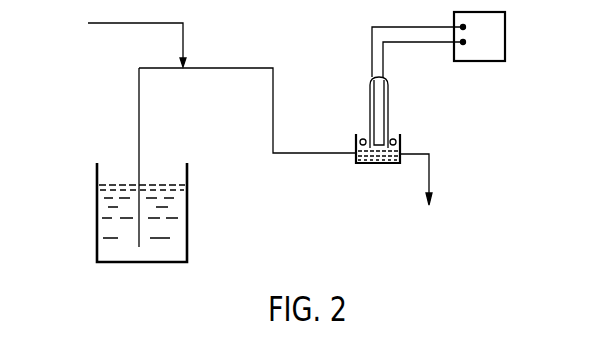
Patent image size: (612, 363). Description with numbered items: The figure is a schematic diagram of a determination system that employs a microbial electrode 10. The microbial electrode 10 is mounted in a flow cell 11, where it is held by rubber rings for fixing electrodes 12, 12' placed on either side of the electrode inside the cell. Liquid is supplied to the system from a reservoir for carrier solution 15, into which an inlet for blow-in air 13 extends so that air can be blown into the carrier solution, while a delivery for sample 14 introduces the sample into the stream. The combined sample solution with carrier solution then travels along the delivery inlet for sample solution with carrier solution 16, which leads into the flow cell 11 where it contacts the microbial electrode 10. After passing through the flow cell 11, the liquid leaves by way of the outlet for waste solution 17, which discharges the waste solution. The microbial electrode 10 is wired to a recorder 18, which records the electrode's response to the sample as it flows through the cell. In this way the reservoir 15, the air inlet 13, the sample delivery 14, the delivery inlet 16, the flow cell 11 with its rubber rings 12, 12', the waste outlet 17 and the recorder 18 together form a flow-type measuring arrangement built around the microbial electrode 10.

The microbial electrode 10 is at (388, 98).
The flow cell 11 is at (365, 165).
The rubber ring for fixing electrodes 12 is at (412, 121).
The rubber ring for fixing electrodes 12' is at (348, 123).
The inlet for blow-in air 13 is at (139, 115).
The delivery for sample 14 is at (124, 40).
The reservoir for carrier solution 15 is at (187, 192).
The delivery inlet for sample solution with carrier solution 16 is at (273, 128).
The outlet for waste solution 17 is at (433, 180).
The recorder 18 is at (505, 30).